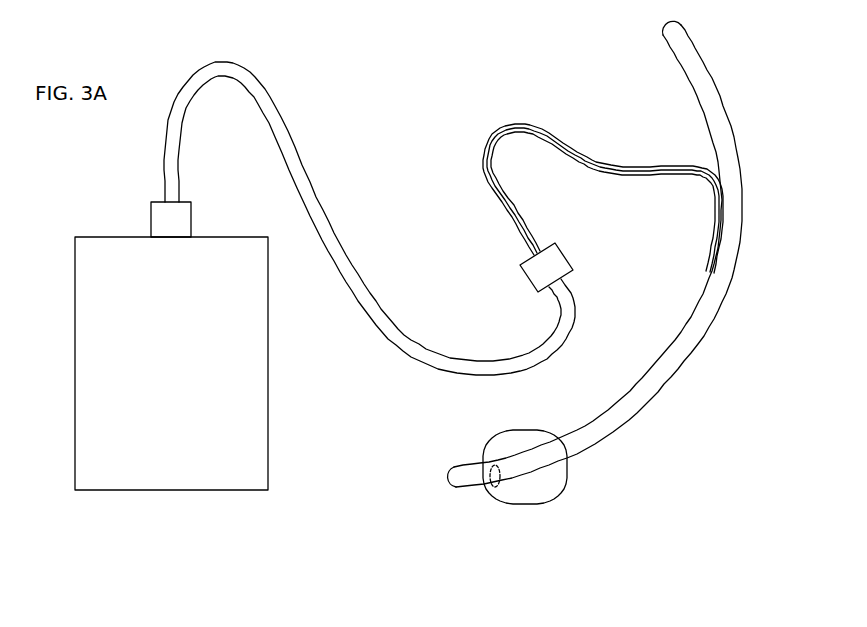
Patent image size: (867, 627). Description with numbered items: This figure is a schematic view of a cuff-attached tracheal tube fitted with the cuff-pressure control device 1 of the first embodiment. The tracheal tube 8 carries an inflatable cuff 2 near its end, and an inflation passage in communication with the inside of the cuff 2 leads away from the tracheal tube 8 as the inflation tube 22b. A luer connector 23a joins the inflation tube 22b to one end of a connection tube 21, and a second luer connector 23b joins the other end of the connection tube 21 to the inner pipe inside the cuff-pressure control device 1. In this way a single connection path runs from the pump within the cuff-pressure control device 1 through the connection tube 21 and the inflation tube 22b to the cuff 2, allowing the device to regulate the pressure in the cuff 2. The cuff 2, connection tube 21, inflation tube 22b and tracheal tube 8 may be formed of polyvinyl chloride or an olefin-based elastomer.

The cuff-pressure control device 1 is at (172, 490).
The cuff 2 is at (542, 485).
The tracheal tube 8 is at (702, 72).
The connection tube 21 is at (398, 338).
The inflation tube 22b is at (618, 166).
The luer connector 23a is at (558, 262).
The luer connector 23b is at (151, 221).